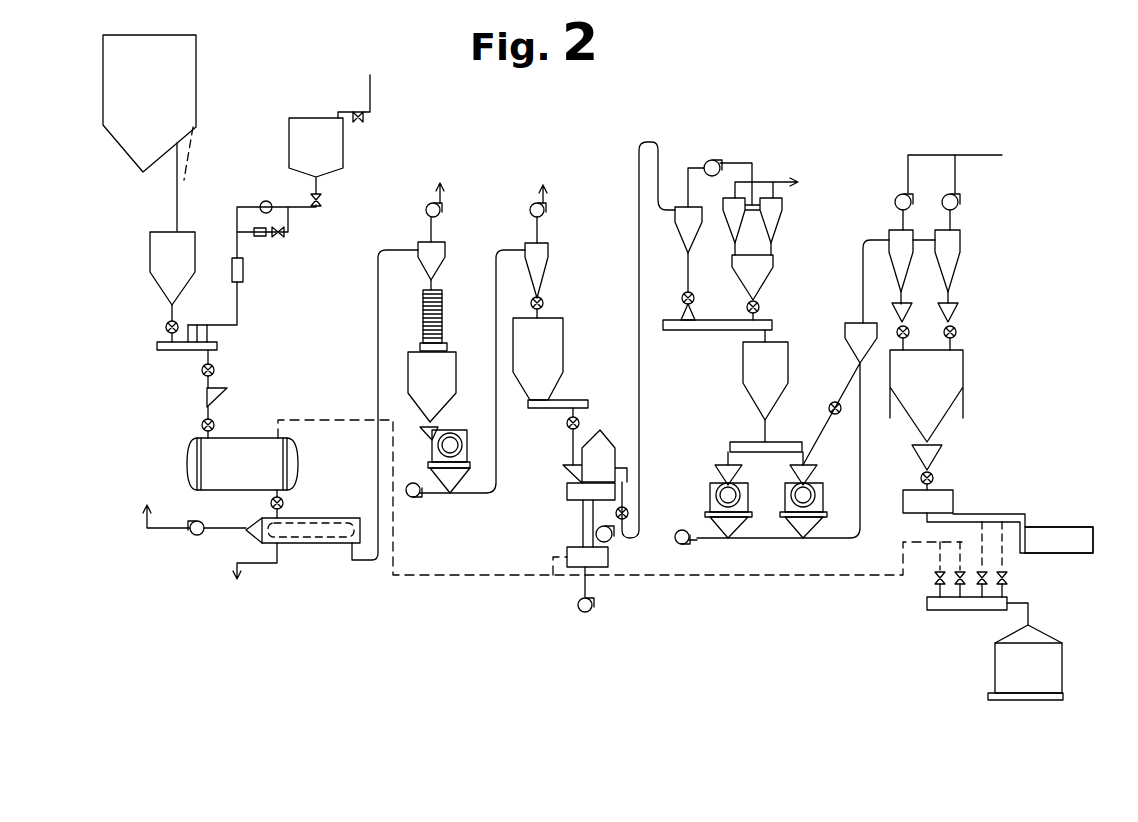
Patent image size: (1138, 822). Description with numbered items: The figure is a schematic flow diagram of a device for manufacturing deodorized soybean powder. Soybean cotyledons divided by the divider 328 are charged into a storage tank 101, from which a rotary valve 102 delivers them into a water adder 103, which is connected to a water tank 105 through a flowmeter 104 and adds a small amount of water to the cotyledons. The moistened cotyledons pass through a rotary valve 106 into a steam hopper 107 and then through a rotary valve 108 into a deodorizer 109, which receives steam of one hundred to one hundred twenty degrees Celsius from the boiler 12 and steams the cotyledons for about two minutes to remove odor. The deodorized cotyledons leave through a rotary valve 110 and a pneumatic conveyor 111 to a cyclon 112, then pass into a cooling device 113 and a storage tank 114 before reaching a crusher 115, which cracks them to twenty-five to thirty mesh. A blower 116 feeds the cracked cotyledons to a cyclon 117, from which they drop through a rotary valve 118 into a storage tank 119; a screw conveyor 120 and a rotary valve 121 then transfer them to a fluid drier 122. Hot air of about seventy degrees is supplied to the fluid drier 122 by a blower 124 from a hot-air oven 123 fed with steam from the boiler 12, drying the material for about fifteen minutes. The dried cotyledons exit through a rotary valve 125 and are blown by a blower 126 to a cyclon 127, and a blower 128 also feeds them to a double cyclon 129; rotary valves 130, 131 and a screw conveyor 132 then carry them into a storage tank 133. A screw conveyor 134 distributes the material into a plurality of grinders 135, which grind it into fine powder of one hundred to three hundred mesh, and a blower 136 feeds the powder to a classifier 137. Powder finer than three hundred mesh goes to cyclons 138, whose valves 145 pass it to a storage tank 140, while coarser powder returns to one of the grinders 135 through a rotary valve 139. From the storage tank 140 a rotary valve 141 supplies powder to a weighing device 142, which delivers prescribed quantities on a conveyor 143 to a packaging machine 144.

The divider 328 is at (125, 93).
The storage tank 101 is at (165, 250).
The rotary valve 102 is at (165, 328).
The water adder 103 is at (157, 346).
The flowmeter 104 is at (245, 268).
The water tank 105 is at (300, 149).
The rotary valve 106 is at (200, 371).
The steam hopper 107 is at (224, 392).
The rotary valve 108 is at (200, 425).
The deodorizer 109 is at (188, 470).
The rotary valve 110 is at (288, 502).
The pneumatic conveyor 111 is at (315, 548).
The cyclon 112 is at (446, 237).
The cooling device 113 is at (443, 318).
The storage tank 114 is at (445, 380).
The crusher 115 is at (443, 430).
The blower 116 is at (418, 498).
The cyclon 117 is at (553, 250).
The valve 118 is at (545, 302).
The storage tank 119 is at (555, 330).
The screw conveyor 120 is at (570, 398).
The rotary valve 121 is at (566, 424).
The fluid drier 122 is at (608, 450).
The hot-air oven 123 is at (567, 550).
The blower 124 is at (595, 610).
The rotary valve 125 is at (630, 513).
The blower 126 is at (610, 546).
The cyclon 127 is at (685, 227).
The blower 128 is at (712, 158).
The double cyclon 129 is at (796, 226).
The rotary valve 130 is at (682, 298).
The rotary valve 131 is at (768, 303).
The screw conveyor 132 is at (711, 333).
The storage tank 133 is at (750, 372).
The screw conveyor 134 is at (742, 440).
The grinders 135 is at (708, 490).
The blower 136 is at (684, 545).
The classifier 137 is at (845, 335).
The cyclons 138 is at (888, 220).
The rotary valve 139 is at (828, 408).
The storage tank 140 is at (955, 375).
The rotary valve 141 is at (935, 477).
The weighing device 142 is at (945, 502).
The conveyor 143 is at (1010, 522).
The packaging machine 144 is at (1070, 528).
The valve 145 is at (896, 327).
The boiler 12 is at (1000, 668).